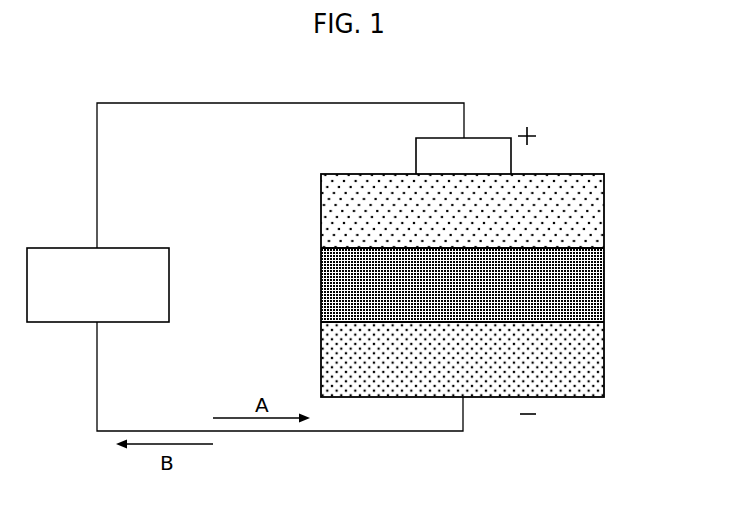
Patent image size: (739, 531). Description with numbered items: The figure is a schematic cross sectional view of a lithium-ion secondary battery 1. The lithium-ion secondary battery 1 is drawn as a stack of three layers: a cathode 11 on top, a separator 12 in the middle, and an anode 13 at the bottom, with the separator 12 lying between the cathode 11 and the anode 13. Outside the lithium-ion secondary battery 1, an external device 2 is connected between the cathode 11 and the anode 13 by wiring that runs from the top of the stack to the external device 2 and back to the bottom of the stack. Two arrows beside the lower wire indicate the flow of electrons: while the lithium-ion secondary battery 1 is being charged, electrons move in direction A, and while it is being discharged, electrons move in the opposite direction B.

The lithium-ion secondary battery 1 is at (506, 285).
The cathode 11 is at (596, 212).
The separator 12 is at (596, 288).
The anode 13 is at (487, 359).
The external device 2 is at (160, 287).